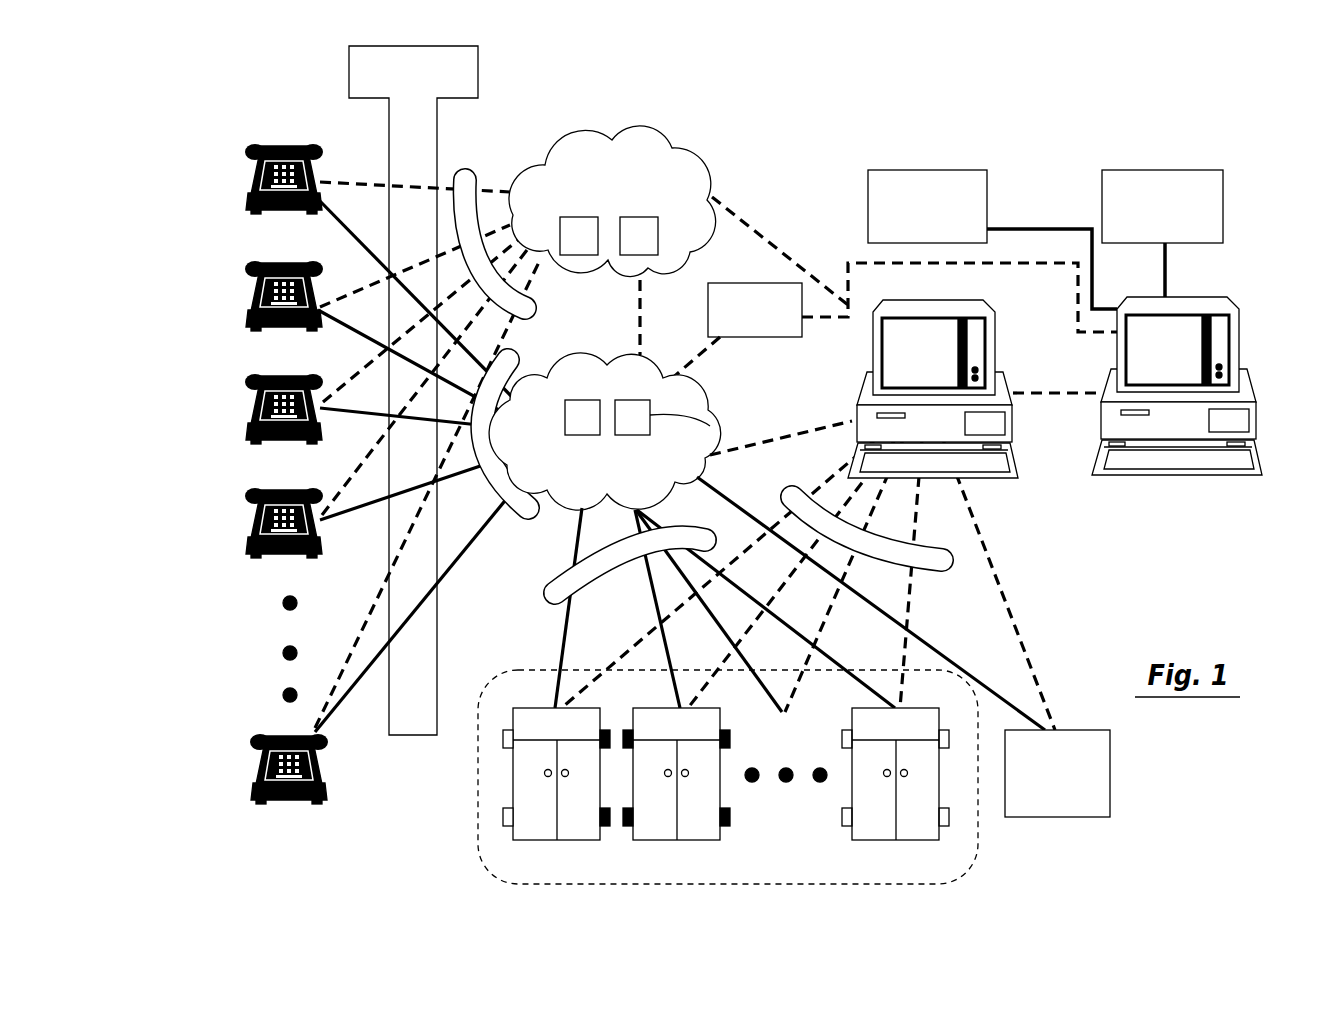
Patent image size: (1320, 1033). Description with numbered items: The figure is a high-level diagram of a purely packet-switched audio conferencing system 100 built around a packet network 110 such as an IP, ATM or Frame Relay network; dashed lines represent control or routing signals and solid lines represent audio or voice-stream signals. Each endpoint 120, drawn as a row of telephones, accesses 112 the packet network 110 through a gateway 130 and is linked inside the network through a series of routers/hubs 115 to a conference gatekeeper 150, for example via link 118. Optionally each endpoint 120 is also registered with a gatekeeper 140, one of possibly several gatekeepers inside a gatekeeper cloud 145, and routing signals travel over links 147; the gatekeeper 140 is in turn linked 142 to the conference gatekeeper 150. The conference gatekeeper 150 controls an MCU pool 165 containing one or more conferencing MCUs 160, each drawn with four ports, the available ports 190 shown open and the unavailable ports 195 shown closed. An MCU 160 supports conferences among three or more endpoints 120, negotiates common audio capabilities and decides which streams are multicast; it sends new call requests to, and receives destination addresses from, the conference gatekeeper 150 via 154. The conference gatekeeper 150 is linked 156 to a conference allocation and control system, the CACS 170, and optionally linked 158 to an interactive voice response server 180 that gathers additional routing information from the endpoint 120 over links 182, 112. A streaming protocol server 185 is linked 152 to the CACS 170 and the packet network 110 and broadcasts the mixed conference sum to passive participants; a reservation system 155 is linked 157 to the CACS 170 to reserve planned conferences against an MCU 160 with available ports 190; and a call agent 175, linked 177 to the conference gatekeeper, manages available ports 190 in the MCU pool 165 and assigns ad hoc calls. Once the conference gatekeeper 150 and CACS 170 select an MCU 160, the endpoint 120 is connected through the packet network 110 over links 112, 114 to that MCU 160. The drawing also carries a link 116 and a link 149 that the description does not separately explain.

The audio conferencing system 100 is at (880, 110).
The packet network 110 is at (610, 366).
The access links 112 is at (530, 514).
The links 114 is at (710, 530).
The routers/hubs 115 is at (712, 427).
The signaling link between S.P.S. and packet network 116 is at (698, 358).
The link 118 is at (757, 450).
The endpoint 120 is at (291, 126).
The gateway 130 is at (437, 153).
The gatekeeper 140 is at (658, 223).
The link 142 is at (797, 243).
The gatekeeper cloud 145 is at (670, 152).
The links 147 is at (480, 180).
The link between gatekeeper cloud and packet network 149 is at (670, 317).
The conference gatekeeper 150 is at (997, 345).
The link 152 is at (1073, 263).
The link 154 is at (943, 562).
The reservation system 155 is at (988, 213).
The link 156 is at (1055, 395).
The link 157 is at (1050, 227).
The link 158 is at (1012, 620).
The MCU 160 is at (553, 786).
The MCU pool 165 is at (530, 672).
The conference allocation and control system (CACS) 170 is at (1233, 342).
The call agent 175 is at (1162, 168).
The link 177 is at (1165, 276).
The interactive voice response (IVR) server 180 is at (1105, 785).
The links 182 is at (917, 628).
The streaming protocol server 185 is at (773, 283).
The available ports 190 is at (503, 812).
The unavailable ports 195 is at (730, 822).